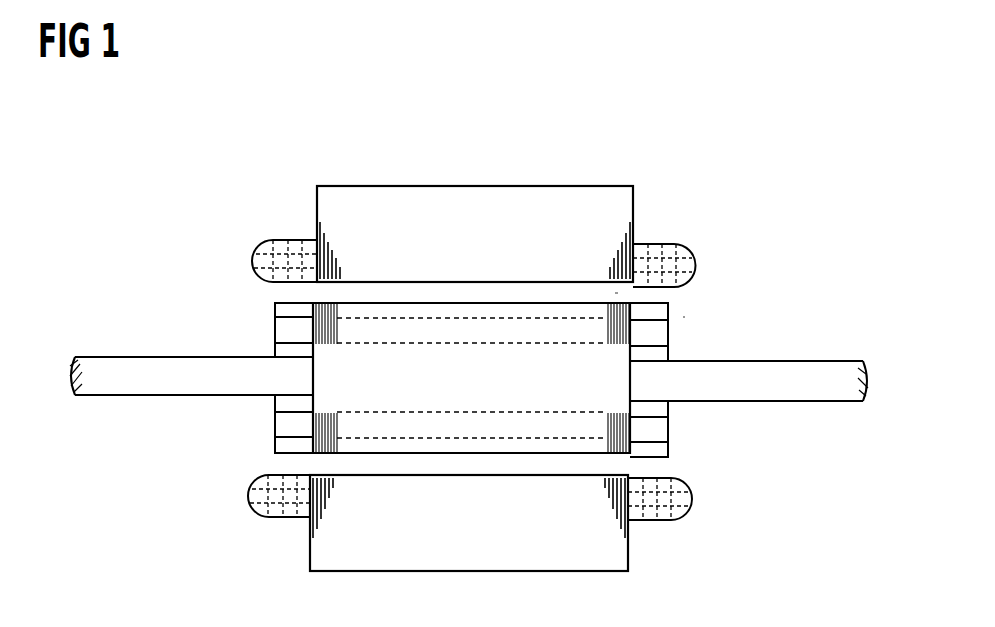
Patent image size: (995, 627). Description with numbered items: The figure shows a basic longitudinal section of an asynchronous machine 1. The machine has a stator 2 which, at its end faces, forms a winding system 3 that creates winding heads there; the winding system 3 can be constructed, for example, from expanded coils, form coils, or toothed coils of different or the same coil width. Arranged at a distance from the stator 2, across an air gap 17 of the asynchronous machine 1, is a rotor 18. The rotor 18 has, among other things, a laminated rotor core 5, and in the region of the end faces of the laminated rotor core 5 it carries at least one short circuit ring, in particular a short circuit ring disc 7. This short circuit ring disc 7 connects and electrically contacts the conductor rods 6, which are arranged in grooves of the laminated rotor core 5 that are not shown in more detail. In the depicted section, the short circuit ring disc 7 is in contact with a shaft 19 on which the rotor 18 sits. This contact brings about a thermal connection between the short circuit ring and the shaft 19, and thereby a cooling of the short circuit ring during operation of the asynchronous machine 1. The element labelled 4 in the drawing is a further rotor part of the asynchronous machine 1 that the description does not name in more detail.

The asynchronous machine 1 is at (490, 163).
The stator 2 is at (392, 198).
The winding system 3 is at (655, 245).
The rotor 4 is at (633, 427).
The laminated rotor core 5 is at (633, 329).
The conductor rods 6 is at (282, 418).
The short circuit ring disc 7 is at (272, 327).
The air gap 17 is at (615, 295).
The rotor 18 is at (683, 318).
The shaft 19 is at (785, 402).